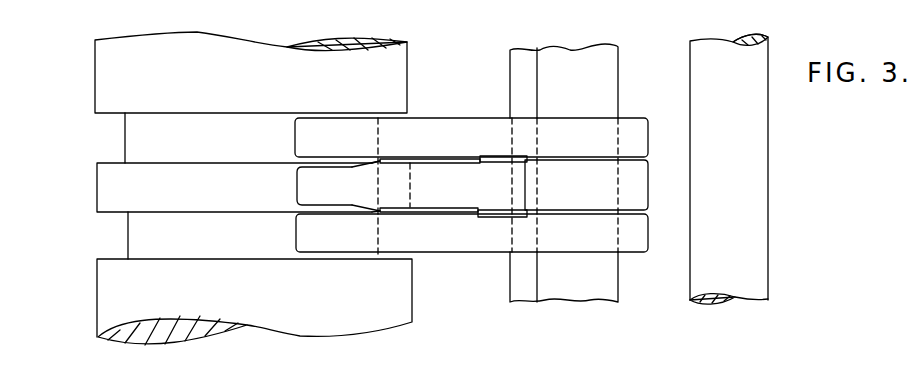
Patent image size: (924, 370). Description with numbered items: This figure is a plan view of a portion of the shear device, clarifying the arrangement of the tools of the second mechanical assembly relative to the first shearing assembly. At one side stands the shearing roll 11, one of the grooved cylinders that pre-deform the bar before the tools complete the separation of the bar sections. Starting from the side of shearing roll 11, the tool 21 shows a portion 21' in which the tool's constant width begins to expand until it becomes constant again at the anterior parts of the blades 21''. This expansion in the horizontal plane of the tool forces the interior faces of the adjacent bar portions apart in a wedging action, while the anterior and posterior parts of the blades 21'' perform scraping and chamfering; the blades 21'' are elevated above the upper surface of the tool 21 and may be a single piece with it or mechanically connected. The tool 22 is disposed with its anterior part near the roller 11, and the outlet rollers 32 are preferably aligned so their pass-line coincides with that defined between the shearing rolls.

The shearing roll 11 is at (400, 292).
The tool 21 is at (526, 178).
The portion of tool 21' is at (430, 142).
The blades 21'' is at (495, 144).
The tool 22 is at (640, 135).
The outlet rollers 32 is at (757, 243).